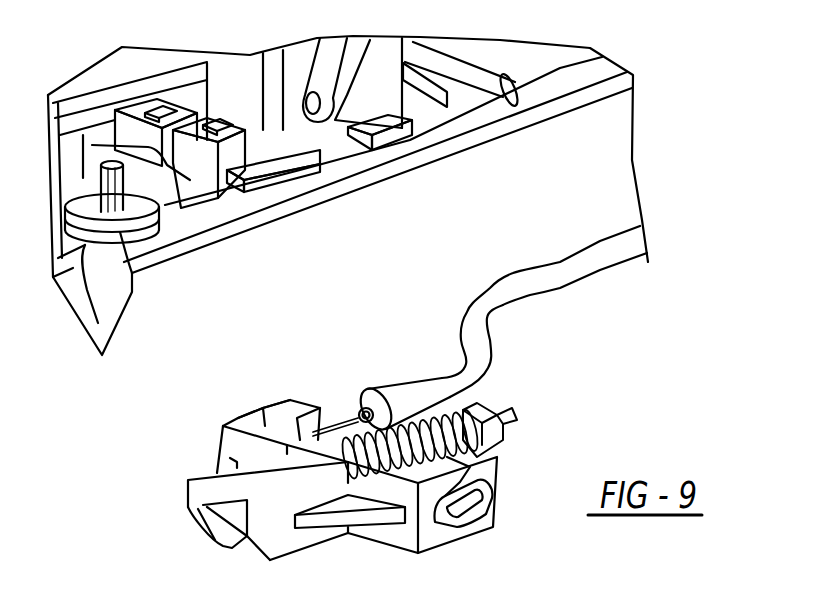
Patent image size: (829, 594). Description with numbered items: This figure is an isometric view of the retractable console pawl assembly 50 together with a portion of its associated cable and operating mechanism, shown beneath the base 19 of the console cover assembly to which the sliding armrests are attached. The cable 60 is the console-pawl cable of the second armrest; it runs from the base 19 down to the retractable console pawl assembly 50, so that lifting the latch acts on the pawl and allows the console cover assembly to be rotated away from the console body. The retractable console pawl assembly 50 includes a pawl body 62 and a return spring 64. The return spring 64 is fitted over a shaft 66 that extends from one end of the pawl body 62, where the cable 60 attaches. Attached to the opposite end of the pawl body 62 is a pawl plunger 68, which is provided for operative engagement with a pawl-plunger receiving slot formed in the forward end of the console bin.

The base 19 is at (587, 158).
The retractable console pawl assembly 50 is at (304, 485).
The cable 60 is at (552, 270).
The pawl body 62 is at (247, 483).
The return spring 64 is at (500, 432).
The shaft 66 is at (503, 402).
The pawl plunger 68 is at (200, 527).